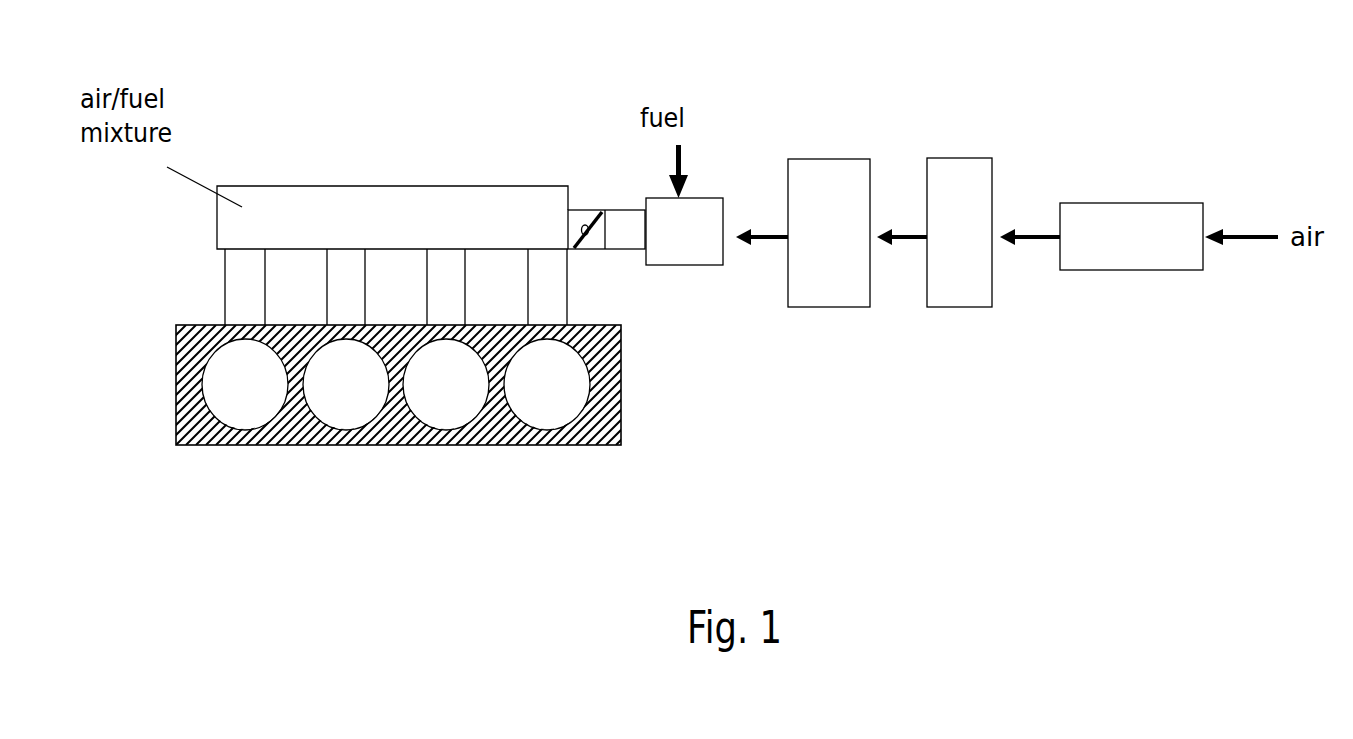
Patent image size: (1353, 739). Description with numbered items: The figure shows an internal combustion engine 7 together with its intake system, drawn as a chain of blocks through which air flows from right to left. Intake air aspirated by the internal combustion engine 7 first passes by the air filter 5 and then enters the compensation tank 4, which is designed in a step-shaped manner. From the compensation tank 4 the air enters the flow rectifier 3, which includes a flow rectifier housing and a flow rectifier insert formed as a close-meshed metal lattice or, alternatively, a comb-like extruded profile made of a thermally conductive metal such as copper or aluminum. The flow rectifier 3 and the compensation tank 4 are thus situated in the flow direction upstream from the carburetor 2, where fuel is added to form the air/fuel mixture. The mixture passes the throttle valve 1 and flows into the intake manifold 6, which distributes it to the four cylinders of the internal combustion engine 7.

The throttle valve 1 is at (583, 208).
The carburetor 2 is at (683, 233).
The flow rectifier 3 is at (827, 242).
The compensation tank 4 is at (945, 238).
The air filter 5 is at (1115, 238).
The intake manifold 6 is at (327, 209).
The internal combustion engine 7 is at (383, 430).